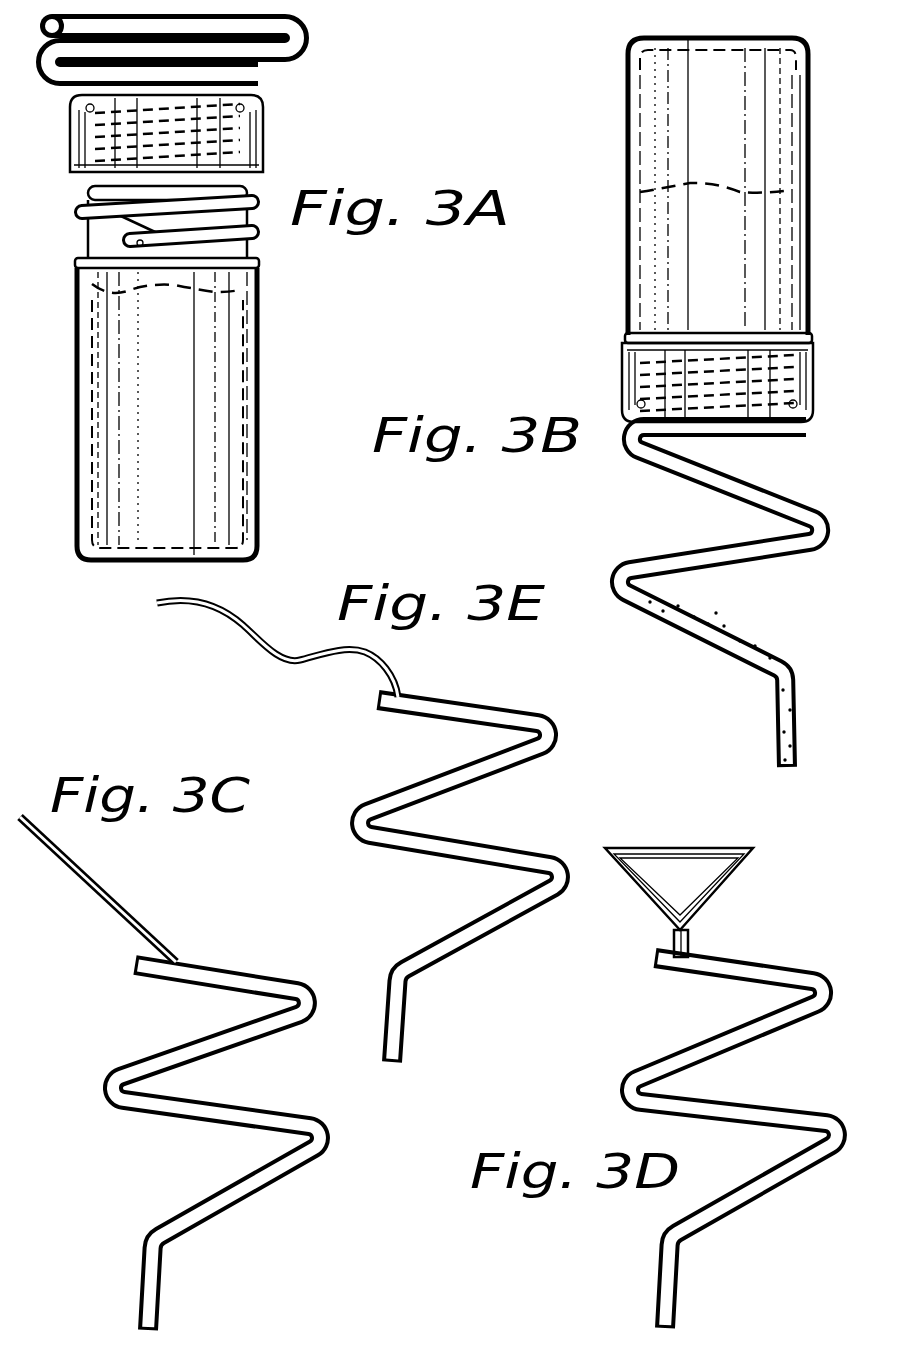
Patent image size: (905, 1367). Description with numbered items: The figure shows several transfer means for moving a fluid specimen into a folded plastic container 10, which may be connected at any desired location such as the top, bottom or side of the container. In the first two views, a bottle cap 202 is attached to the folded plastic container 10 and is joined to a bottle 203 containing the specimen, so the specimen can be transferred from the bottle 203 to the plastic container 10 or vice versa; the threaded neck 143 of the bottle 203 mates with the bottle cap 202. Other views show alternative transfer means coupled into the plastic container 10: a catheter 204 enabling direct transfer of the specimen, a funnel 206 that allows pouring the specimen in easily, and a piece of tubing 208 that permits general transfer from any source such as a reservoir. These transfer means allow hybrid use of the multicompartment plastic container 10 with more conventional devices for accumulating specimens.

In FIG. 3B, the plastic container 10 is at (800, 498).
In FIG. 3E, the plastic container 10 is at (473, 783).
In FIG. 3C, the plastic container 10 is at (243, 1043).
In FIG. 3D, the plastic container 10 is at (820, 977).
In FIG. 3A, the threaded neck 143 is at (97, 206).
In FIG. 3A, the bottle cap 202 is at (263, 136).
In FIG. 3B, the bottle cap 202 is at (803, 390).
In FIG. 3A, the bottle 203 is at (247, 312).
In FIG. 3B, the bottle 203 is at (800, 122).
In FIG. 3C, the catheter 204 is at (100, 885).
In FIG. 3D, the funnel 206 is at (727, 890).
In FIG. 3E, the tubing 208 is at (310, 669).